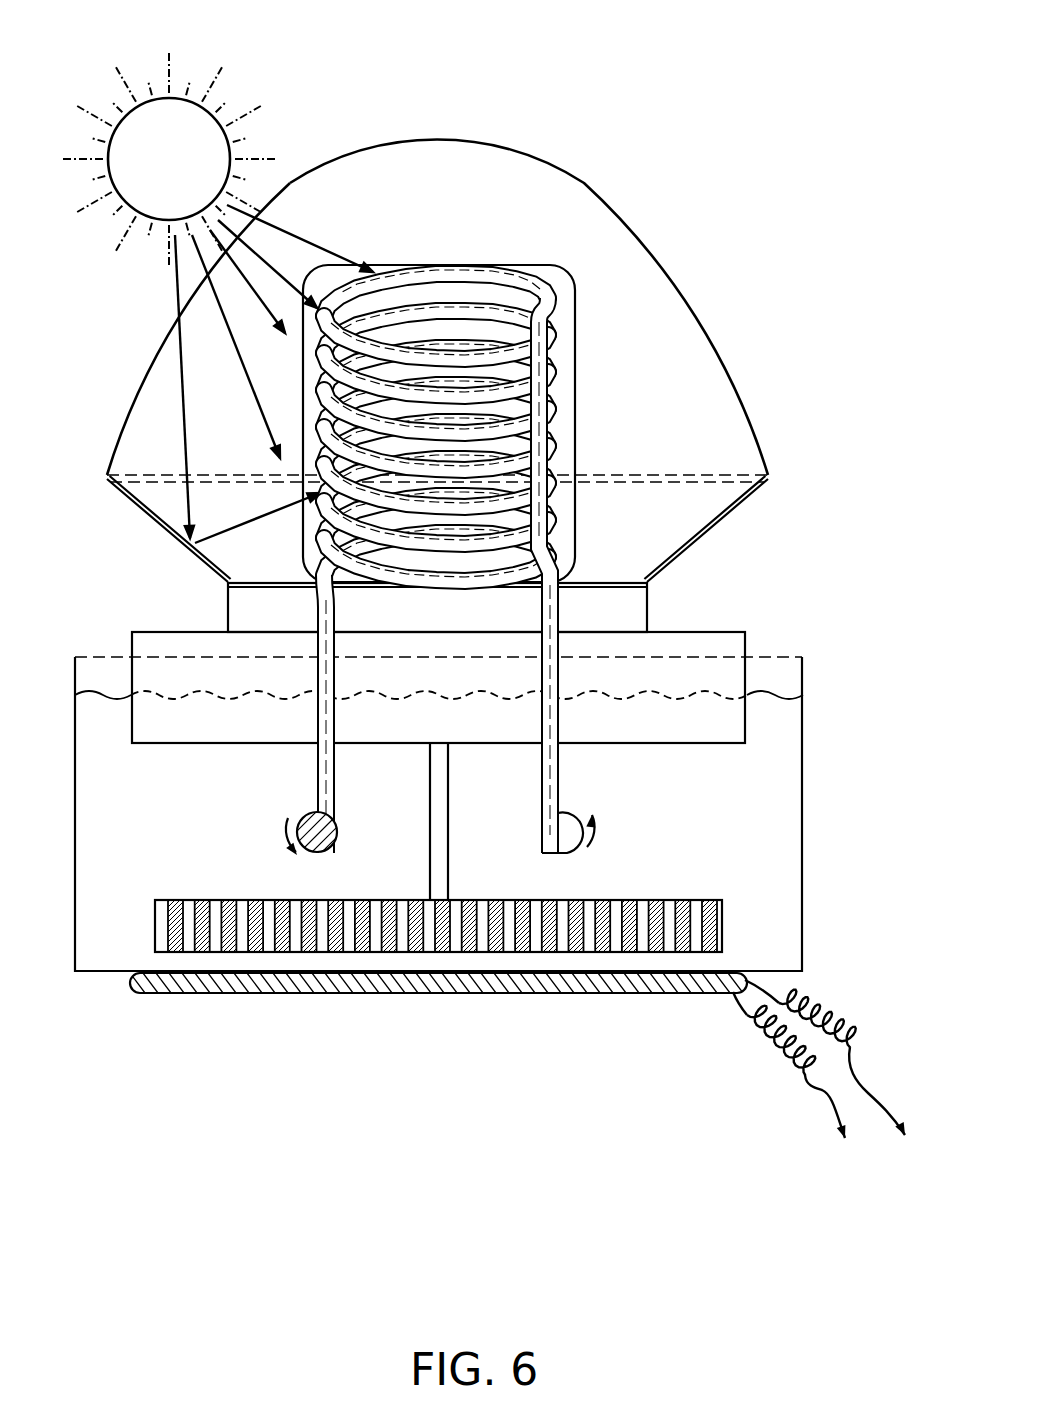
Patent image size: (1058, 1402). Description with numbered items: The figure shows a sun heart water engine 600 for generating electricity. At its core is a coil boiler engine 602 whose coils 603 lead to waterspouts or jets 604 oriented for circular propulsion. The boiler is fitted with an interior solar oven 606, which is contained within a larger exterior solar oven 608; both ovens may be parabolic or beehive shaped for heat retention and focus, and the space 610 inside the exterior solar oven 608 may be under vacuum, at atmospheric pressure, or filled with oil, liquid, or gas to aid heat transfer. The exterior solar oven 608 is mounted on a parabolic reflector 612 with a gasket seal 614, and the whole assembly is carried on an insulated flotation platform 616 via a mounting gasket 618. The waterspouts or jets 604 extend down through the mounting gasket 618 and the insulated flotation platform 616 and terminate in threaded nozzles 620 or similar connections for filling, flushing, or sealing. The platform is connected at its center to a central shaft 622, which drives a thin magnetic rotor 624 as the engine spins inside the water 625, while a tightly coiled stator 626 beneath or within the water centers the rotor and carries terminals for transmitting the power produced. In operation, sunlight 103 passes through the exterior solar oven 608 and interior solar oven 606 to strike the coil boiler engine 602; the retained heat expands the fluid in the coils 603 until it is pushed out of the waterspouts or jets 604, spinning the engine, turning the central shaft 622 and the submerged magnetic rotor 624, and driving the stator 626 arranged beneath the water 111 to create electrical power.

The sun heart water engine 600 is at (874, 34).
The sunlight 103 is at (313, 242).
The coil boiler engine 602 is at (478, 398).
The coils 603 is at (450, 277).
The waterspouts or jets 604 is at (319, 787).
The interior solar oven 606 is at (575, 349).
The exterior solar oven 608 is at (142, 398).
The space 610 is at (693, 340).
The parabolic reflector 612 is at (667, 573).
The gasket seal 614 is at (107, 478).
The insulated flotation platform 616 is at (147, 632).
The mounting gasket 618 is at (228, 607).
The threaded nozzles 620 is at (317, 853).
The central shaft 622 is at (430, 856).
The magnetic rotor 624 is at (160, 900).
The water 625 is at (76, 820).
The stator 626 is at (130, 980).
The water 111 is at (687, 839).